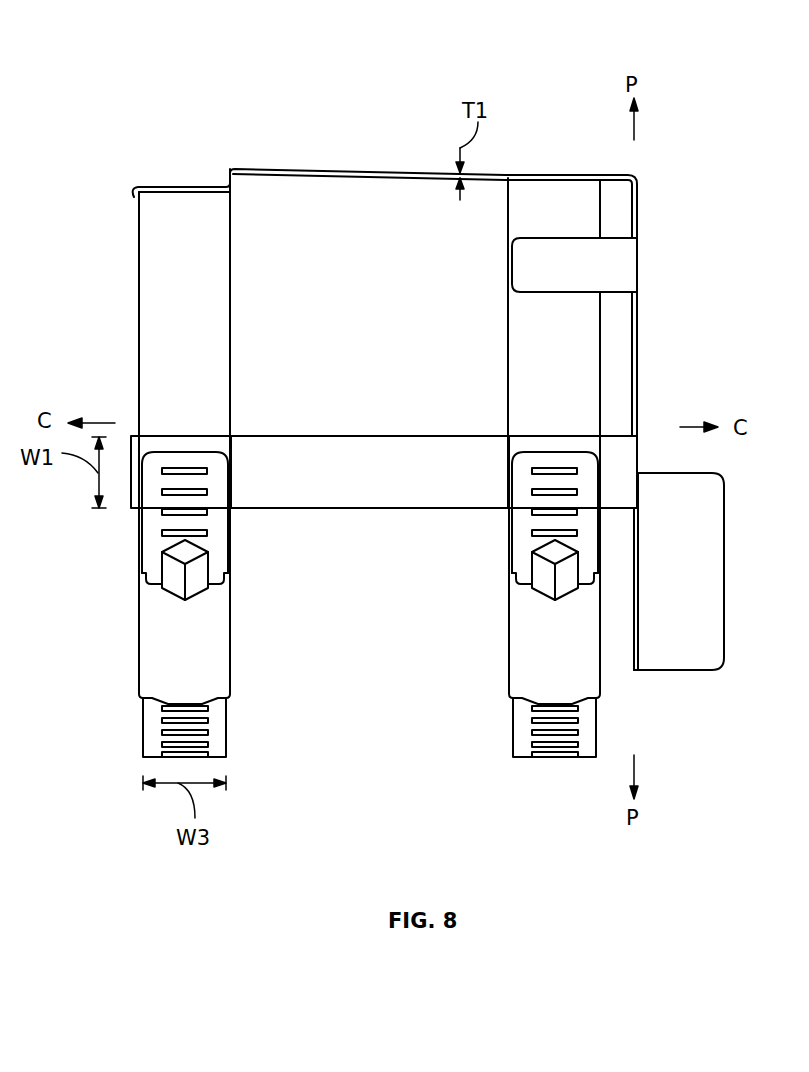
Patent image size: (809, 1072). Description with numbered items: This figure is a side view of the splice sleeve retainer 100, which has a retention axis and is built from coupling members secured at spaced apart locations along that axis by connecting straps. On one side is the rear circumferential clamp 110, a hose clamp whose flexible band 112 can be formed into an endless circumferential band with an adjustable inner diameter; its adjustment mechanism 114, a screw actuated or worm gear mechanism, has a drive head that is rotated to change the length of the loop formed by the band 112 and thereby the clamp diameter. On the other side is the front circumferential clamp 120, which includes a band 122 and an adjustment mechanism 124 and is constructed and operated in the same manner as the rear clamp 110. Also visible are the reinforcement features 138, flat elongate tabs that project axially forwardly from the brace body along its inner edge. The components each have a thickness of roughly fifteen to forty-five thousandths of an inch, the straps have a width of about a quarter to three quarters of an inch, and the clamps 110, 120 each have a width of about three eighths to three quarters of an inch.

The splice sleeve retainer 100 is at (183, 52).
The rear circumferential clamp 110 is at (132, 314).
The flexible band 112 is at (157, 248).
The adjustment mechanism 114 is at (158, 640).
The front circumferential clamp 120 is at (500, 372).
The band 122 is at (530, 325).
The adjustment mechanism 124 is at (537, 650).
The reinforcement features 138 is at (707, 528).